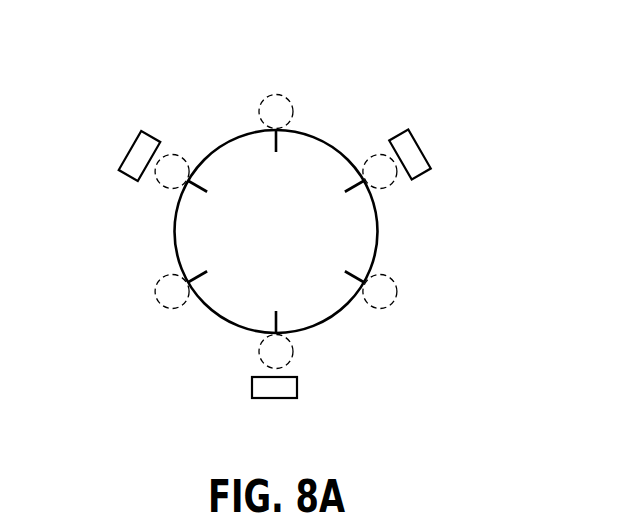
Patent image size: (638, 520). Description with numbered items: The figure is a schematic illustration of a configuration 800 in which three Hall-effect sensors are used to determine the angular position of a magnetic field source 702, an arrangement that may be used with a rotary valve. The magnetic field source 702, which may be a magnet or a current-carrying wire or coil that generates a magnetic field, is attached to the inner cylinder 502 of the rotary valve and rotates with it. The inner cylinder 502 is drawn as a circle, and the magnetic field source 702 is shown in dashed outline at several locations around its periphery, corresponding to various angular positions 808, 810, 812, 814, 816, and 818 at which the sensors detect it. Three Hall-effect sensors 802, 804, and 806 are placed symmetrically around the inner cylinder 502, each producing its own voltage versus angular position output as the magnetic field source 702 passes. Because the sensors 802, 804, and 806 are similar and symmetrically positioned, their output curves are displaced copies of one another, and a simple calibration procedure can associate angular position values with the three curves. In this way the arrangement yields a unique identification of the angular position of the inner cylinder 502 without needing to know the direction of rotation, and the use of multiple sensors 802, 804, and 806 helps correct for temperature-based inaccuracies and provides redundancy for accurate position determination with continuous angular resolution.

The configuration 800 is at (400, 67).
The inner cylinder 502 is at (334, 148).
The magnetic field source 702 is at (293, 102).
The Hall-effect sensor 802 is at (297, 388).
The Hall-effect sensor 804 is at (120, 158).
The Hall-effect sensor 806 is at (430, 158).
The angular position 808 is at (274, 310).
The angular position 810 is at (208, 269).
The angular position 812 is at (209, 190).
The angular position 814 is at (278, 148).
The angular position 816 is at (345, 194).
The angular position 818 is at (343, 270).